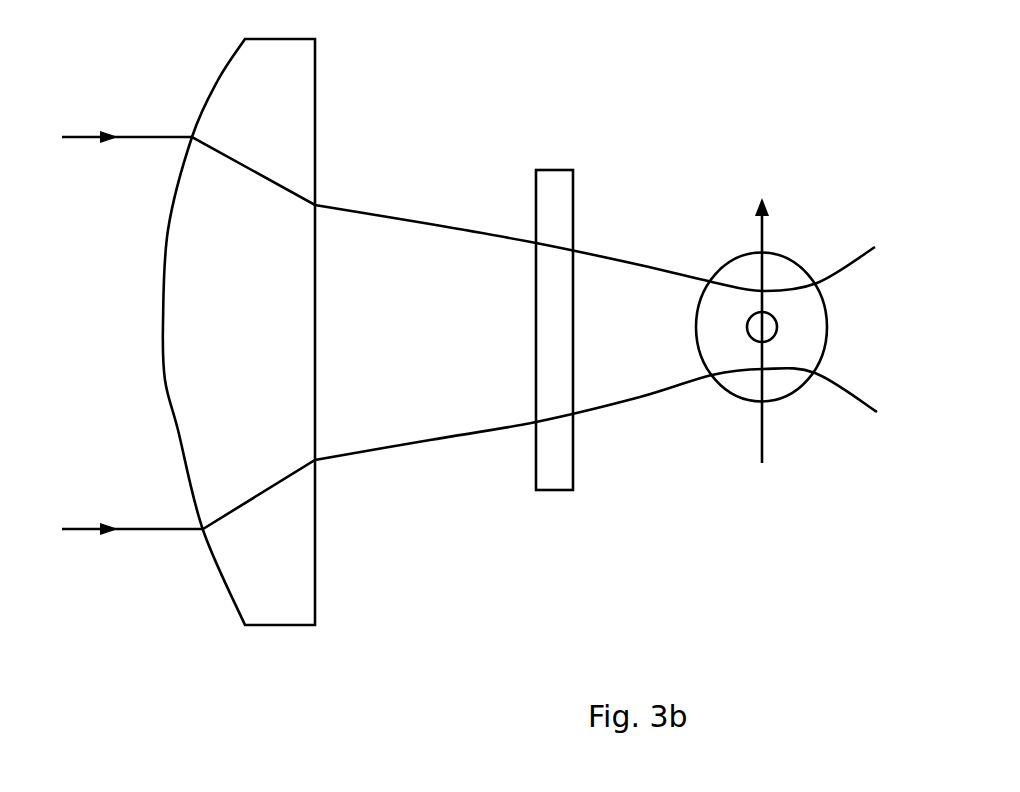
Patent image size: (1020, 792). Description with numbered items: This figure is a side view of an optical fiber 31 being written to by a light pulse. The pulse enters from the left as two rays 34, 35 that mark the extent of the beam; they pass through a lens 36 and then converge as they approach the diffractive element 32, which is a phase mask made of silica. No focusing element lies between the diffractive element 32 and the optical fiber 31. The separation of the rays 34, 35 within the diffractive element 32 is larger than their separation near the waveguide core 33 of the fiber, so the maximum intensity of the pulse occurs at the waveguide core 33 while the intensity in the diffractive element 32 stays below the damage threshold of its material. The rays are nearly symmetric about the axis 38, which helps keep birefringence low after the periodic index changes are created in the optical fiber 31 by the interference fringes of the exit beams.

The optical fiber 31 is at (783, 254).
The diffractive element 32 is at (548, 170).
The waveguide core 33 is at (768, 342).
The ray 34 is at (100, 532).
The ray 35 is at (81, 137).
The lens 36 is at (316, 85).
The axis 38 is at (758, 238).